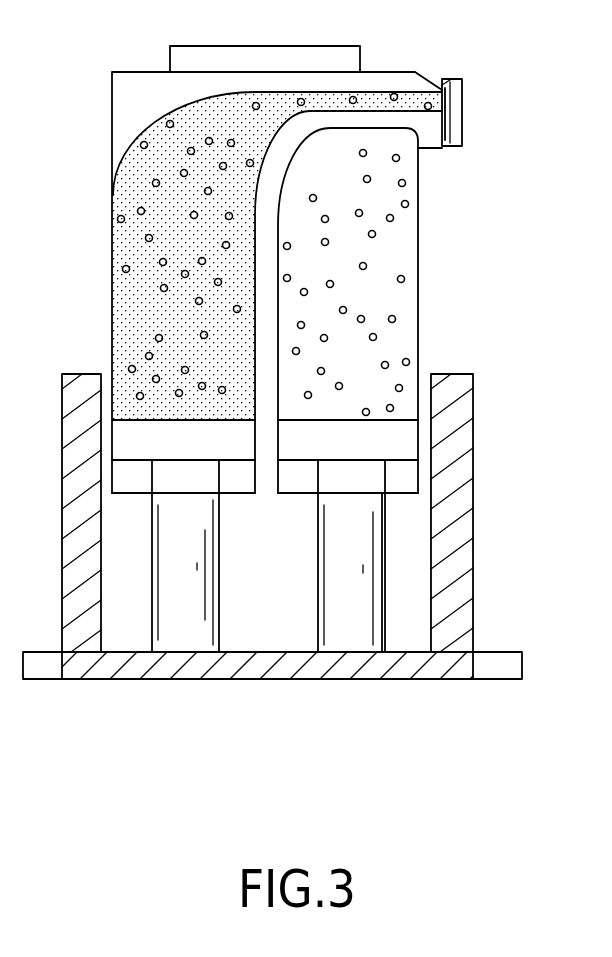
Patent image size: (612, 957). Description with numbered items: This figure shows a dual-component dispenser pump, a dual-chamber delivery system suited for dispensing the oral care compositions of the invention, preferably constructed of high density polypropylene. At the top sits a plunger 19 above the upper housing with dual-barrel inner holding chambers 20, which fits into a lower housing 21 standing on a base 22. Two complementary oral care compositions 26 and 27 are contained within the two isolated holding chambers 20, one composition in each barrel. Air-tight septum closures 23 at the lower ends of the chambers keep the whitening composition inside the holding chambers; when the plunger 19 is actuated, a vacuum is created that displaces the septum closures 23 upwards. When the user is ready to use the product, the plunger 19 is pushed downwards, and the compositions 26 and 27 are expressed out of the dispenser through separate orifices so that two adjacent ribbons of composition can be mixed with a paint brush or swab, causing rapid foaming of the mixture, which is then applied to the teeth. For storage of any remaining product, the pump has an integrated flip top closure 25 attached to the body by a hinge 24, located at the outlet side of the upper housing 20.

The plunger 19 is at (353, 62).
The upper housing with dual-barrel inner holding chambers 20 is at (130, 106).
The lower housing 21 is at (470, 441).
The base 22 is at (513, 666).
The air-tight septum closures 23 is at (130, 436).
The hinge 24 is at (443, 73).
The flip top closure 25 is at (457, 128).
The oral care composition 26 is at (122, 209).
The oral care composition 27 is at (403, 285).